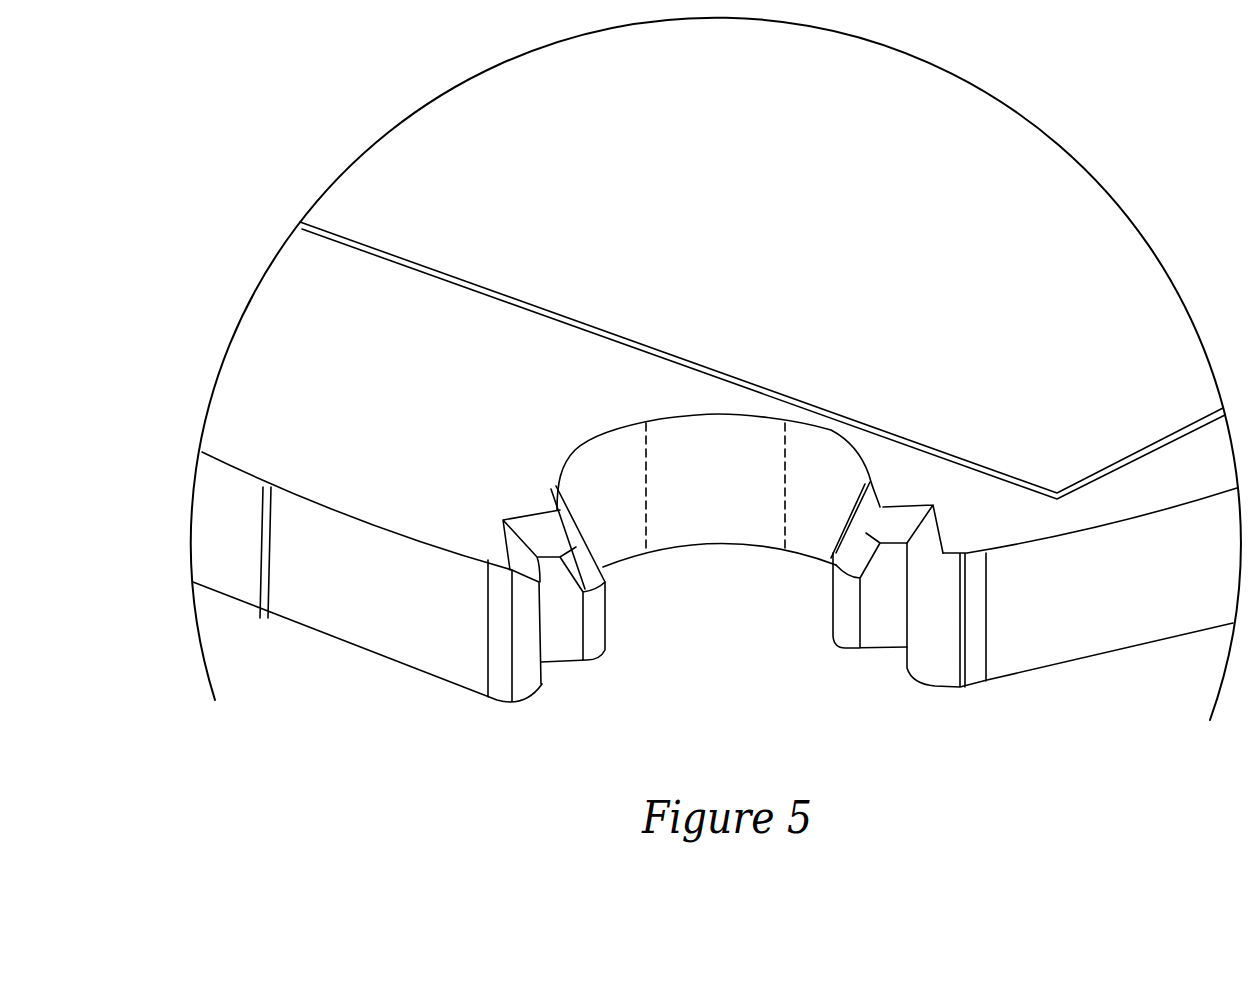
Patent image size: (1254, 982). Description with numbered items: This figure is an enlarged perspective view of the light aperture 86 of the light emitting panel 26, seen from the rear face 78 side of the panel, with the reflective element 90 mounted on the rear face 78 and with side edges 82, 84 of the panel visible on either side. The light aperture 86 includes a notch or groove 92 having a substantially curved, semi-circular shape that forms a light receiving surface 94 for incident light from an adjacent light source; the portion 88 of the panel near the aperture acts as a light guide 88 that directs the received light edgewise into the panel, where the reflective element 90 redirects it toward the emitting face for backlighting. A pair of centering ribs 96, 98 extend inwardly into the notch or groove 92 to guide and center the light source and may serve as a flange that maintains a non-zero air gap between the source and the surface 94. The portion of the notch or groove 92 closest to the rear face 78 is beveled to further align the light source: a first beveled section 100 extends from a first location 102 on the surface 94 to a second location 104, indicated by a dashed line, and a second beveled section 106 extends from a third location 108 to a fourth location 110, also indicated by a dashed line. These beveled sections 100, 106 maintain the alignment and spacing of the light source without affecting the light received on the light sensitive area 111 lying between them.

The light emitting panel 26 is at (982, 148).
The reflective element 90 is at (1067, 213).
The light guide 88 is at (415, 352).
The rear face 78 is at (378, 468).
The side edge 82 is at (323, 603).
The side edge 84 is at (1098, 610).
The light aperture 86 is at (776, 734).
The notch or groove 92 is at (714, 628).
The light receiving surface 94 is at (701, 513).
The centering rib 96 is at (594, 628).
The centering rib 98 is at (845, 623).
The first beveled section 100 is at (598, 475).
The first location 102 is at (562, 530).
The second location 104 is at (645, 452).
The second beveled section 106 is at (828, 475).
The third location 108 is at (790, 452).
The fourth location 110 is at (873, 523).
The light sensitive area 111 is at (715, 440).